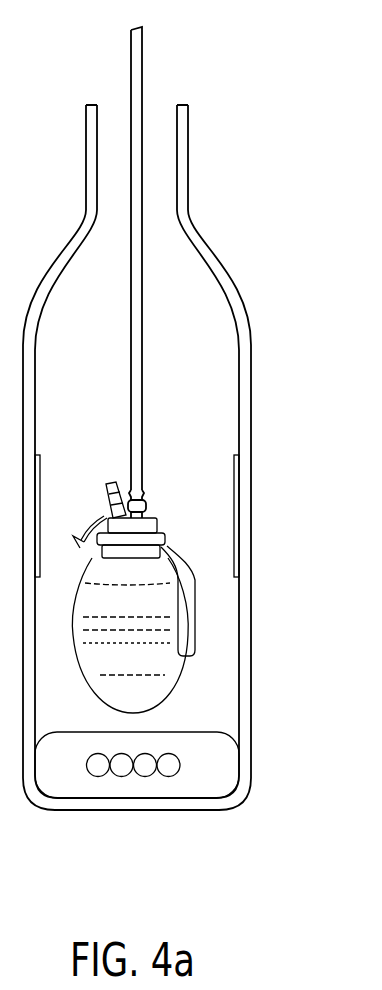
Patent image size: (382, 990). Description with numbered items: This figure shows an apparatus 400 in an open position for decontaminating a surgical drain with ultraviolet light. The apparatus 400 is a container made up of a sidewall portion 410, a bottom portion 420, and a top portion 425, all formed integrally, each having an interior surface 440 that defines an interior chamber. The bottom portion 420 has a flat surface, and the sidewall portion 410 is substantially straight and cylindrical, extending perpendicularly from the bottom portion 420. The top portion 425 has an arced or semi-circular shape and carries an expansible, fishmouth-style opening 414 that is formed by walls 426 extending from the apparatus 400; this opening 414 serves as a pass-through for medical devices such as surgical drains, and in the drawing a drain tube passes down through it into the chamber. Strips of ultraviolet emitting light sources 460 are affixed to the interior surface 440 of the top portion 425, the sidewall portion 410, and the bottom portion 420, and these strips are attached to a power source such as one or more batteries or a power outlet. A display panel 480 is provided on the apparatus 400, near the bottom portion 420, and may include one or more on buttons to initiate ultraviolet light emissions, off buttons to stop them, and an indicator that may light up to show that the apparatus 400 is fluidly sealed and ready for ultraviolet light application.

The apparatus 400 is at (106, 828).
The sidewall portion 410 is at (246, 485).
The opening 414 is at (159, 98).
The bottom portion 420 is at (203, 807).
The top portion 425 is at (231, 277).
The walls 426 is at (189, 180).
The interior surface 440 is at (238, 410).
The strips of ultraviolet emitting light sources 460 is at (40, 480).
The display panel 480 is at (225, 770).